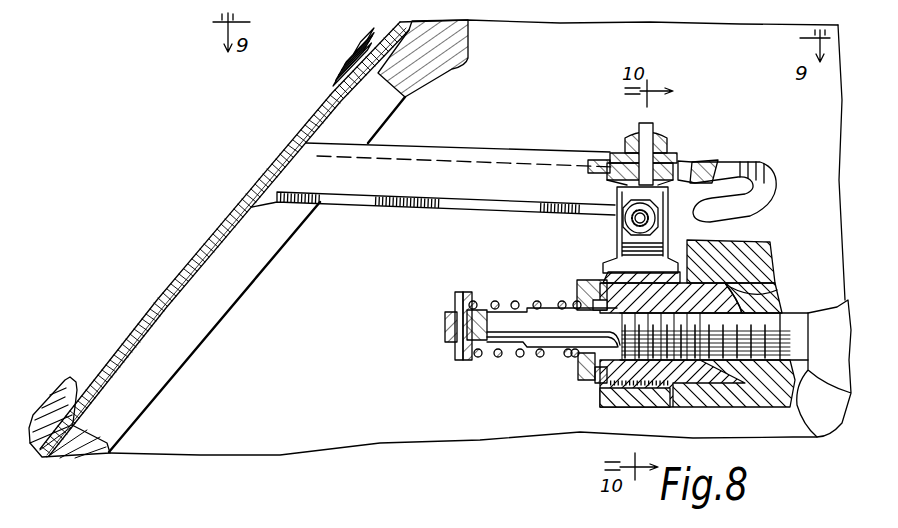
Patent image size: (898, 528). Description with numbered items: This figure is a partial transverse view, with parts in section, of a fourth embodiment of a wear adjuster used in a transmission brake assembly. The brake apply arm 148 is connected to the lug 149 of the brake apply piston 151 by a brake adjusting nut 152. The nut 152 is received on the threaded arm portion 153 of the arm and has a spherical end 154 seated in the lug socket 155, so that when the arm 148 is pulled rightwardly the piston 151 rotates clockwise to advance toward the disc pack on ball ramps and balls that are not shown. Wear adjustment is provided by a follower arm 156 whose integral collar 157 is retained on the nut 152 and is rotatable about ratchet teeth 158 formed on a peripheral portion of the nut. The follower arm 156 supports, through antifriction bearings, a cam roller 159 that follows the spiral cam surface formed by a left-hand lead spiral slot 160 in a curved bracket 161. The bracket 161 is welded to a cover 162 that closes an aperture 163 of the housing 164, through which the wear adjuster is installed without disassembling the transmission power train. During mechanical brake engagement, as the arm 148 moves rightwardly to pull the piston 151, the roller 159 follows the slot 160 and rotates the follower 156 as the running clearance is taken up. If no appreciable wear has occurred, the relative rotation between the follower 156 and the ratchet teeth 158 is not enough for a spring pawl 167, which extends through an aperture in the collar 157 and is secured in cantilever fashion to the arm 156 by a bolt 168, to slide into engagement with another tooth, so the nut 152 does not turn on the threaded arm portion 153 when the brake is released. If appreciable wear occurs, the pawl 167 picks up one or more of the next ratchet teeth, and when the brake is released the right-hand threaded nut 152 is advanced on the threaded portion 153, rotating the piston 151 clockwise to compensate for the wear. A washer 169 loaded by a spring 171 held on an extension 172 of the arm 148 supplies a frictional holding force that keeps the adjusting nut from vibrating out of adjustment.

The brake apply arm 148 is at (837, 305).
The lug 149 is at (757, 243).
The brake apply piston 151 is at (640, 423).
The brake adjusting nut 152 is at (592, 378).
The threaded arm portion 153 is at (763, 374).
The spherical end 154 is at (760, 297).
The lug socket 155 is at (763, 293).
The follower arm 156 is at (613, 238).
The collar 157 is at (667, 404).
The ratchet teeth 158 is at (597, 398).
The cam roller 159 is at (665, 158).
The spiral slot 160 is at (712, 203).
The curved bracket 161 is at (530, 173).
The cover 162 is at (197, 257).
The aperture 163 is at (372, 90).
The housing 164 is at (437, 70).
The spring pawl 167 is at (660, 257).
The bolt 168 is at (625, 215).
The washer 169 is at (583, 288).
The spring 171 is at (498, 355).
The extension 172 is at (447, 330).